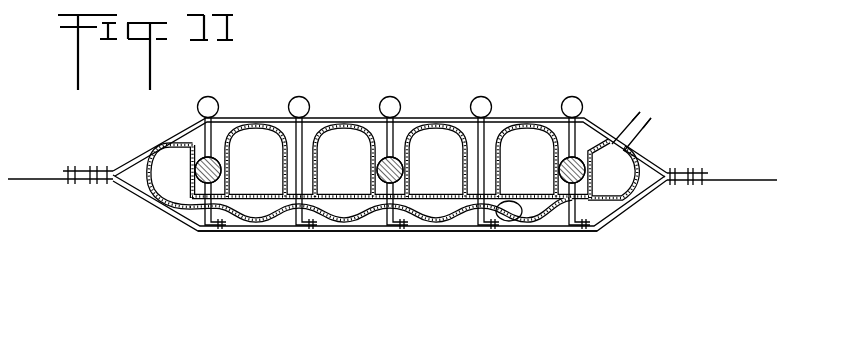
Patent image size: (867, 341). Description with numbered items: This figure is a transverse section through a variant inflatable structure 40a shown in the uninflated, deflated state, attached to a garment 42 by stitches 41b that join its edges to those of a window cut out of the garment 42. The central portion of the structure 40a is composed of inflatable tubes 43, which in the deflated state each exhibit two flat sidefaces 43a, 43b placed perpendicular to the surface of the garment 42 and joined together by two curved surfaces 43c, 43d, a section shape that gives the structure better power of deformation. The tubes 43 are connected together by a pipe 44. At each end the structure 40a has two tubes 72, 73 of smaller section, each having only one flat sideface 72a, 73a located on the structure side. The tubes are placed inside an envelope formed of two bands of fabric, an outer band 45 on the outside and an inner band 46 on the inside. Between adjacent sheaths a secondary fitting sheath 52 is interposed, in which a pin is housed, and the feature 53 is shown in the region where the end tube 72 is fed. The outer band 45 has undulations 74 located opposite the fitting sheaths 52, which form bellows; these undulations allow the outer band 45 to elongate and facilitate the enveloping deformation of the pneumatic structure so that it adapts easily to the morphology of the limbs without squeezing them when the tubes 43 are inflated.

The inflatable structure 40a is at (548, 240).
The stitches 41b is at (690, 182).
The garment 42 is at (50, 178).
The inflatable tubes 43 is at (345, 228).
The flat sideface 43a is at (223, 171).
The flat sideface 43b is at (288, 178).
The curved surface 43c is at (258, 222).
The curved surface 43d is at (253, 126).
The pipe 44 is at (516, 221).
The outer band of fabric 45 is at (522, 118).
The inner band of fabric 46 is at (432, 235).
The fitting sheath 52 is at (393, 133).
The inlet opening 53 is at (650, 119).
The end tube 72 is at (613, 176).
The flat sideface 72a is at (619, 141).
The end tube 73 is at (172, 177).
The flat sideface 73a is at (187, 190).
The undulations 74 is at (390, 97).